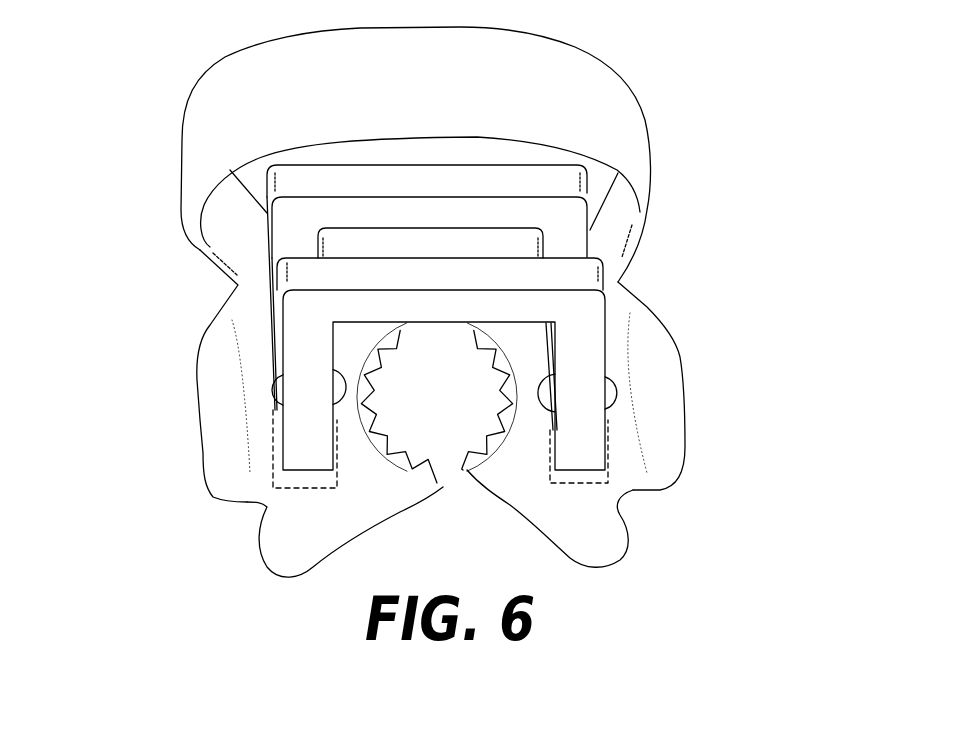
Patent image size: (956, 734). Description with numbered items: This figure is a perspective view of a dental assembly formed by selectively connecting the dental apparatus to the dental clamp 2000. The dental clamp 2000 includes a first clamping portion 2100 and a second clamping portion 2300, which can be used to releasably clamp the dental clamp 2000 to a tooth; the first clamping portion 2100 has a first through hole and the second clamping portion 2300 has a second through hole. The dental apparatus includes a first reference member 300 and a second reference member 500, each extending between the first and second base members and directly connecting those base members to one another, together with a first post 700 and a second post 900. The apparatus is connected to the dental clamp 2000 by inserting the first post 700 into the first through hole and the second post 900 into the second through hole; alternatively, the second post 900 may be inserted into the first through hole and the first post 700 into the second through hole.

The dental clamp 2000 is at (684, 118).
The first reference member 300 is at (480, 252).
The second reference member 500 is at (360, 233).
The first clamping portion 2100 is at (200, 442).
The second clamping portion 2300 is at (683, 430).
The first post 700 is at (275, 476).
The second post 900 is at (610, 473).